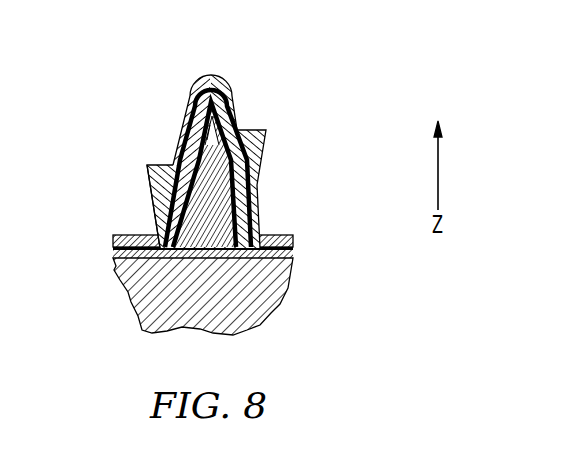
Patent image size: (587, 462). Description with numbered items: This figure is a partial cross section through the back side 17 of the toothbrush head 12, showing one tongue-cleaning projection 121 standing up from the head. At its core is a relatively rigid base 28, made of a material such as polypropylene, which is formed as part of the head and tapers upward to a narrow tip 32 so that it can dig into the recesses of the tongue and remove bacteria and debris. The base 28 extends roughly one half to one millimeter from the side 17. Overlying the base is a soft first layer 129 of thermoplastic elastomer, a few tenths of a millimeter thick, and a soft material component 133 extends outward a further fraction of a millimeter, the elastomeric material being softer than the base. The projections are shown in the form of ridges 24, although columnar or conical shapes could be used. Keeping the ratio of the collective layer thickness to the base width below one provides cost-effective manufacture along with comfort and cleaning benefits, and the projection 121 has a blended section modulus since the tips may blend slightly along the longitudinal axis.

The head 12 is at (252, 308).
The back side 17 is at (282, 236).
The ridges 24 is at (251, 183).
The base 28 is at (197, 225).
The narrow tip 32 is at (186, 115).
The projection 121 is at (208, 135).
The first layer 129 is at (241, 120).
The soft material component 133 is at (147, 165).